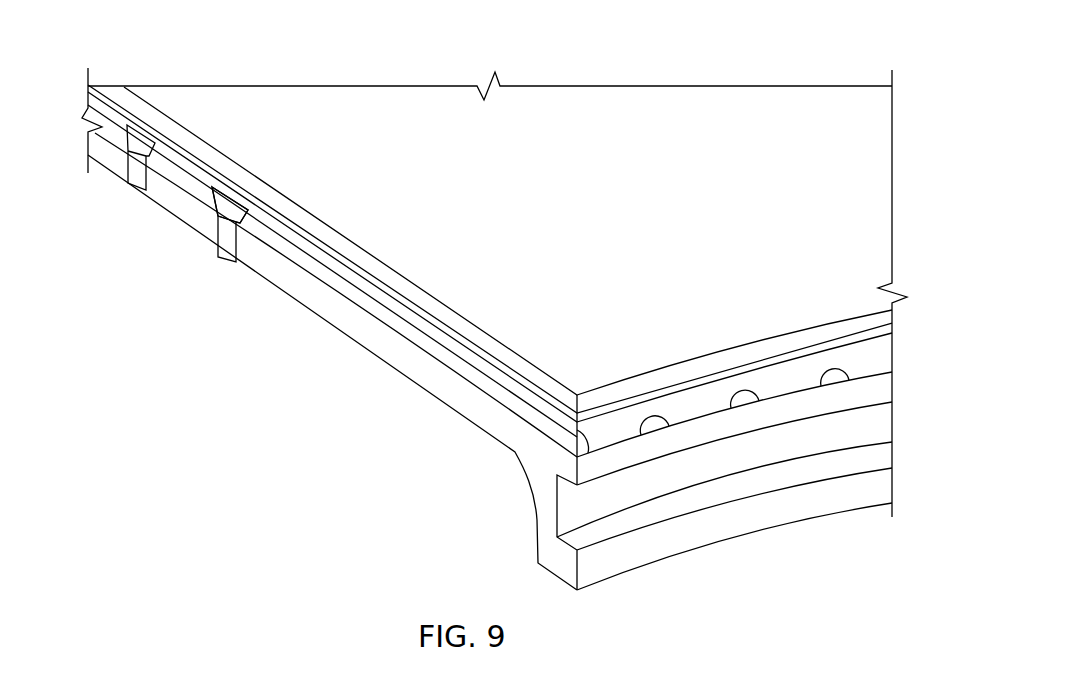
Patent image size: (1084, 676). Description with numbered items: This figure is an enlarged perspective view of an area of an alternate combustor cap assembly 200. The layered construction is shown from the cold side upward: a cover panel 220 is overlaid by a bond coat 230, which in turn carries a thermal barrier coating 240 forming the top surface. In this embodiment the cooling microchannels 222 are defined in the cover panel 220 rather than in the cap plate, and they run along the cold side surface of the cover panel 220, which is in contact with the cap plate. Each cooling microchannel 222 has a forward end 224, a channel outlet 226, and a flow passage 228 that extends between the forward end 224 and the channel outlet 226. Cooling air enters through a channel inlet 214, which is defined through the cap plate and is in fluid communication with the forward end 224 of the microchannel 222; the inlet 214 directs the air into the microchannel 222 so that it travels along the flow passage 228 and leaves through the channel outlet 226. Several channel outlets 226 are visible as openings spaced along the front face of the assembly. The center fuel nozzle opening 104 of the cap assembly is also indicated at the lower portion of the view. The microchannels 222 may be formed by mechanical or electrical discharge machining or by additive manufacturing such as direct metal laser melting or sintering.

The cap assembly 200 is at (146, 51).
The thermal barrier coating 240 is at (556, 126).
The bond coat 230 is at (890, 333).
The cover panel 220 is at (884, 360).
The flow passage 228 is at (310, 264).
The cooling microchannel 222 is at (408, 331).
The channel outlet 226 is at (838, 377).
The channel inlet 214 is at (137, 188).
The forward end 224 is at (227, 207).
The center fuel nozzle opening 104 is at (578, 506).